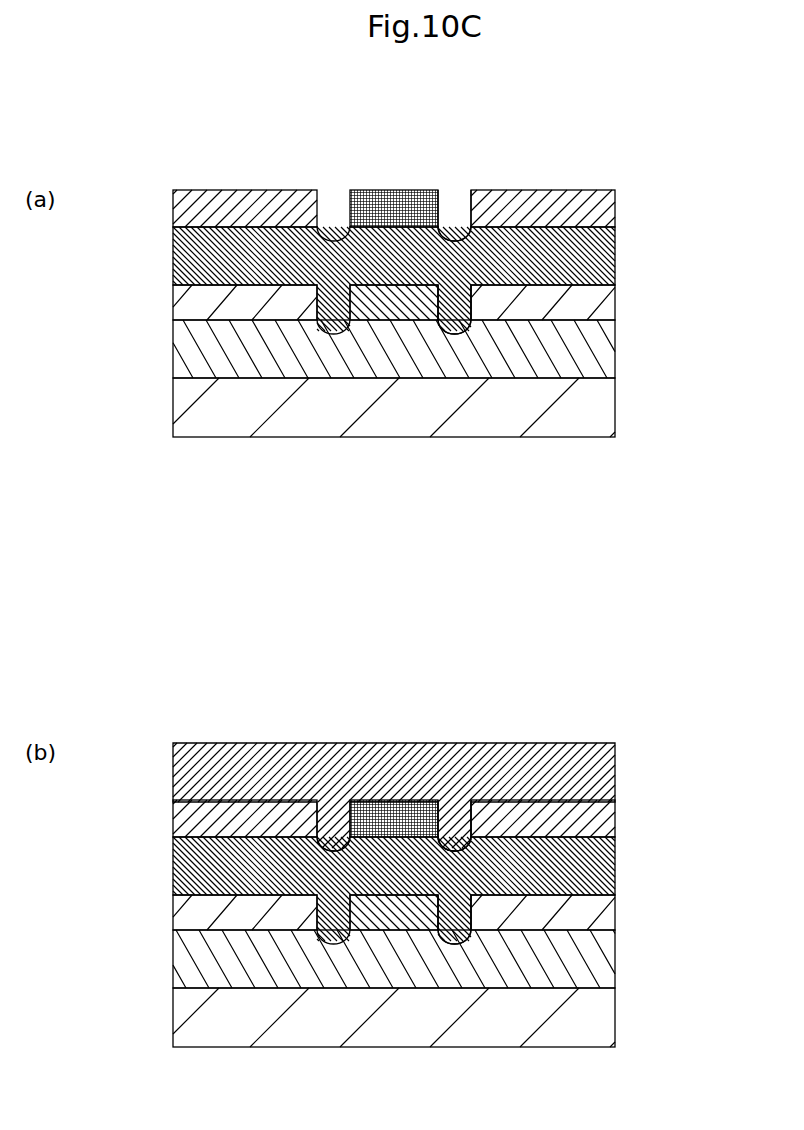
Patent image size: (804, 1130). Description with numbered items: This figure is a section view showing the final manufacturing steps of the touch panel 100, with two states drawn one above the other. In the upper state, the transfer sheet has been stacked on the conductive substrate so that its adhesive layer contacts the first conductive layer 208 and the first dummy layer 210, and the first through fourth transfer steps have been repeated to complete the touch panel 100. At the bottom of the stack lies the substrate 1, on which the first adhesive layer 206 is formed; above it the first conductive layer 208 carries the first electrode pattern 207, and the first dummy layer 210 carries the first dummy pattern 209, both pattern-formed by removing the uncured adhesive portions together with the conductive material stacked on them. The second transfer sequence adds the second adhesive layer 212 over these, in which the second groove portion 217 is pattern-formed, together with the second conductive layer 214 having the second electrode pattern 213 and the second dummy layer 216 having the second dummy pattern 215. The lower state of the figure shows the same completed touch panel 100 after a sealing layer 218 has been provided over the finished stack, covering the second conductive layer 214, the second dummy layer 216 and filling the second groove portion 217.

The touch panel 100 is at (397, 153).
The substrate 1 is at (600, 400).
The first adhesive layer 206 is at (600, 348).
The first electrode pattern 207 is at (393, 300).
The first conductive layer 208 is at (459, 687).
The first dummy pattern 209 is at (420, 687).
The first dummy layer 210 is at (396, 687).
The second adhesive layer 212 is at (600, 255).
The second electrode pattern 213 is at (190, 207).
The second conductive layer 214 is at (396, 513).
The second dummy pattern 215 is at (367, 190).
The second dummy layer 216 is at (261, 500).
The second groove portion 217 is at (455, 220).
The sealing layer 218 is at (239, 782).